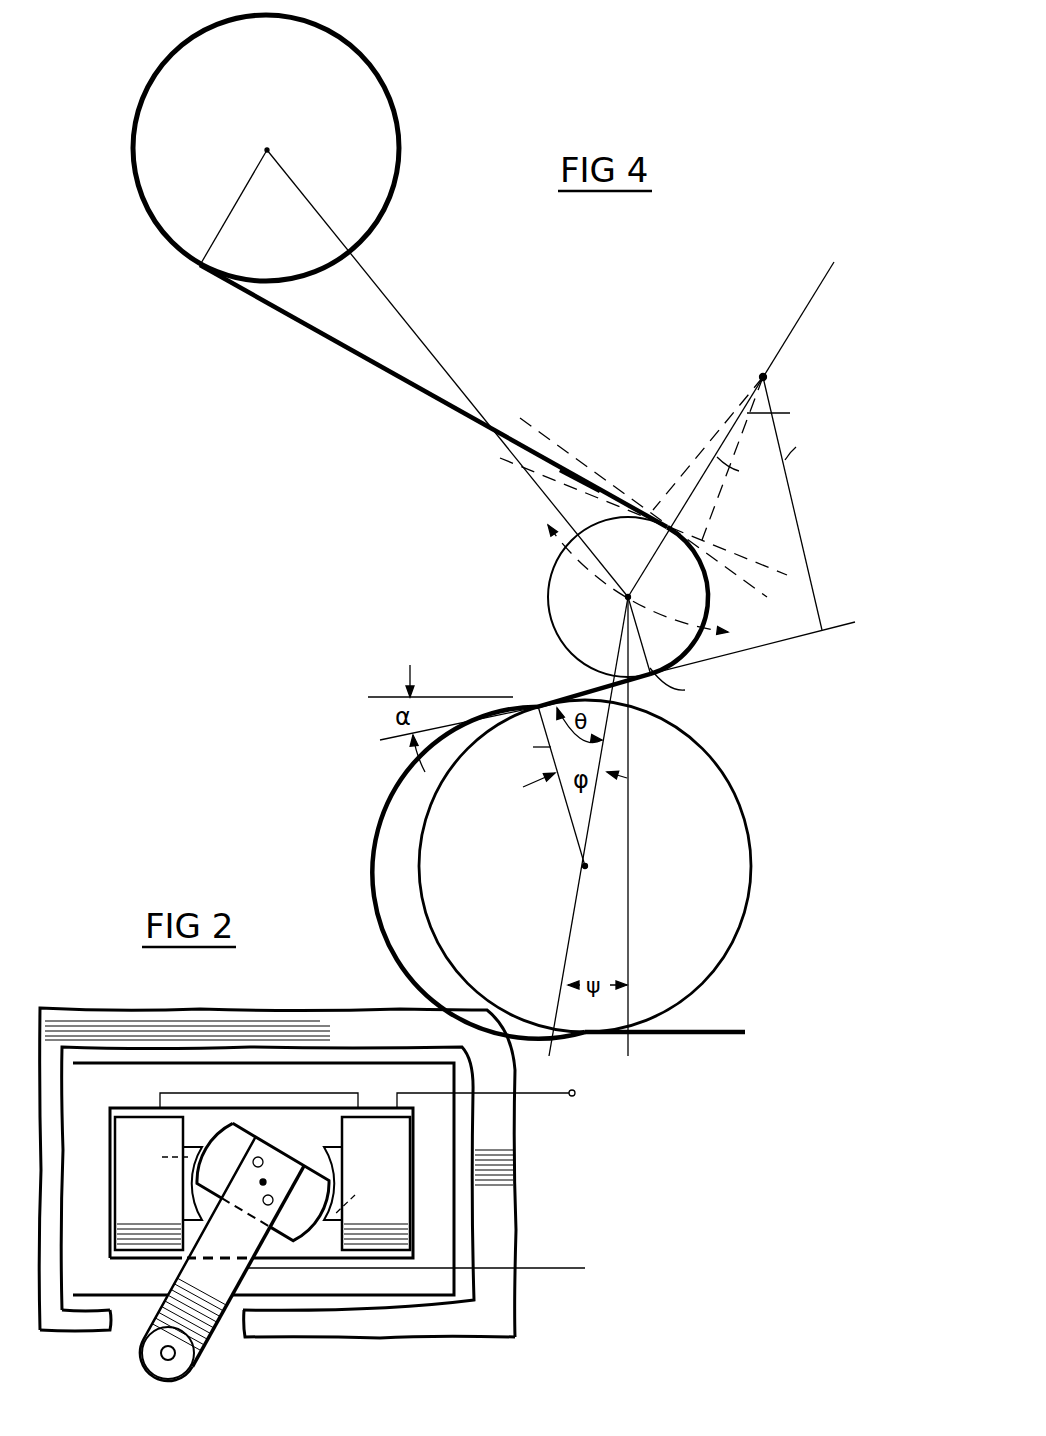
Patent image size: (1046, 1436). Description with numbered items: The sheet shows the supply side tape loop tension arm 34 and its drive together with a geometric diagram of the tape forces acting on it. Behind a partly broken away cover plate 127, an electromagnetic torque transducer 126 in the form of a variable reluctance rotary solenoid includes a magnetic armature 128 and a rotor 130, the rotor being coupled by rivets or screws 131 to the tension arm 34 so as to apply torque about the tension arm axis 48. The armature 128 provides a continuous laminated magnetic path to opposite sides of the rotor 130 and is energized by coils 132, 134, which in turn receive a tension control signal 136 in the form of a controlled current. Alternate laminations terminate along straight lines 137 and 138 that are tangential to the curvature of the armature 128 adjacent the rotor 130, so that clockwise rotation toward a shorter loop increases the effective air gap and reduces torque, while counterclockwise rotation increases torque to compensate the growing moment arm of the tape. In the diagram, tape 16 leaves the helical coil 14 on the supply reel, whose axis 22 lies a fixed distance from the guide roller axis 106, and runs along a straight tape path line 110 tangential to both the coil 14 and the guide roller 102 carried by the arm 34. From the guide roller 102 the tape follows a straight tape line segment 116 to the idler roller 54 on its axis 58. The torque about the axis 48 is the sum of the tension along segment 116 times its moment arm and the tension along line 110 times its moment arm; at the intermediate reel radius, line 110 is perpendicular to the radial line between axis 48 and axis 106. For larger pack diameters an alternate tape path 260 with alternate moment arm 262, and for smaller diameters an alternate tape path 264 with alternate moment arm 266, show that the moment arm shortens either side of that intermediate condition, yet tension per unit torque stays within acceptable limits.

In FIG. 4, the helical coil 14 is at (397, 160).
In FIG. 4, the supply reel axis 22 is at (267, 150).
In FIG. 4, the tape 16 is at (337, 343).
In FIG. 4, the tape path line 110 is at (567, 460).
In FIG. 4, the guide roller 102 is at (549, 594).
In FIG. 2, the guide roller 102 is at (192, 1357).
In FIG. 4, the guide roller axis 106 is at (632, 597).
In FIG. 2, the guide roller axis 106 is at (161, 1353).
In FIG. 4, the tension arm axis 48 is at (763, 377).
In FIG. 2, the tension arm axis 48 is at (268, 1182).
In FIG. 4, the alternate tape path 264 is at (542, 438).
In FIG. 4, the alternate moment arm 266 is at (716, 440).
In FIG. 4, the alternate moment arm 262 is at (702, 527).
In FIG. 4, the alternate tape path 260 is at (512, 461).
In FIG. 4, the straight tape line segment 116 is at (653, 701).
In FIG. 4, the idler roller 54 is at (736, 918).
In FIG. 4, the idler roller axis 58 is at (585, 866).
In FIG. 2, the magnetic armature 128 is at (372, 1290).
In FIG. 2, the cover plate 127 is at (507, 1140).
In FIG. 2, the electromagnetic torque transducer 126 is at (372, 1062).
In FIG. 2, the rotor 130 is at (232, 1157).
In FIG. 2, the coil 134 is at (145, 1118).
In FIG. 2, the coil 132 is at (381, 1117).
In FIG. 2, the straight line 137 is at (155, 1158).
In FIG. 2, the straight line 138 is at (368, 1192).
In FIG. 2, the rivets or screws 131 is at (259, 1156).
In FIG. 2, the tension arm 34 is at (250, 1268).
In FIG. 2, the tension control signal 136 is at (563, 1268).